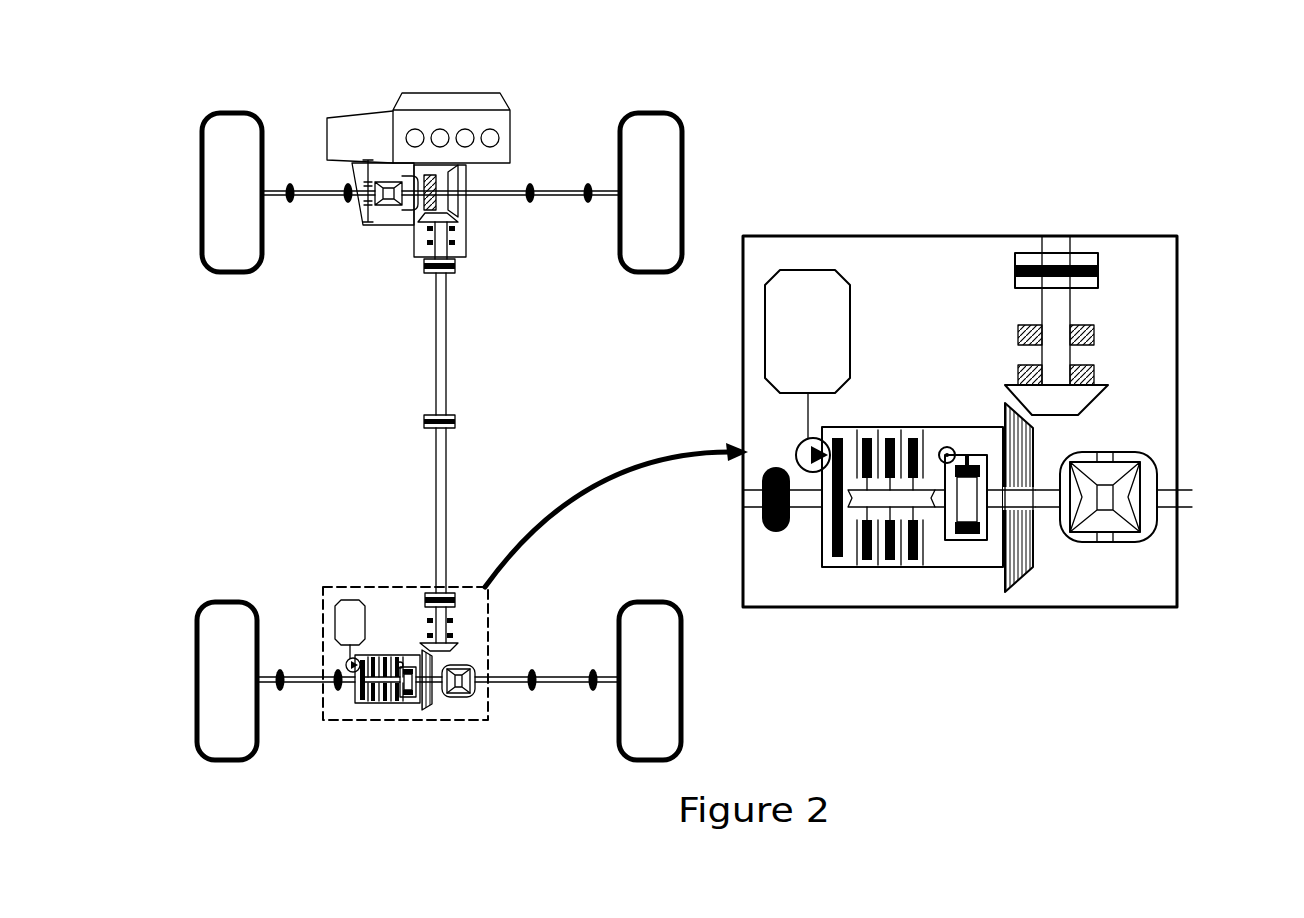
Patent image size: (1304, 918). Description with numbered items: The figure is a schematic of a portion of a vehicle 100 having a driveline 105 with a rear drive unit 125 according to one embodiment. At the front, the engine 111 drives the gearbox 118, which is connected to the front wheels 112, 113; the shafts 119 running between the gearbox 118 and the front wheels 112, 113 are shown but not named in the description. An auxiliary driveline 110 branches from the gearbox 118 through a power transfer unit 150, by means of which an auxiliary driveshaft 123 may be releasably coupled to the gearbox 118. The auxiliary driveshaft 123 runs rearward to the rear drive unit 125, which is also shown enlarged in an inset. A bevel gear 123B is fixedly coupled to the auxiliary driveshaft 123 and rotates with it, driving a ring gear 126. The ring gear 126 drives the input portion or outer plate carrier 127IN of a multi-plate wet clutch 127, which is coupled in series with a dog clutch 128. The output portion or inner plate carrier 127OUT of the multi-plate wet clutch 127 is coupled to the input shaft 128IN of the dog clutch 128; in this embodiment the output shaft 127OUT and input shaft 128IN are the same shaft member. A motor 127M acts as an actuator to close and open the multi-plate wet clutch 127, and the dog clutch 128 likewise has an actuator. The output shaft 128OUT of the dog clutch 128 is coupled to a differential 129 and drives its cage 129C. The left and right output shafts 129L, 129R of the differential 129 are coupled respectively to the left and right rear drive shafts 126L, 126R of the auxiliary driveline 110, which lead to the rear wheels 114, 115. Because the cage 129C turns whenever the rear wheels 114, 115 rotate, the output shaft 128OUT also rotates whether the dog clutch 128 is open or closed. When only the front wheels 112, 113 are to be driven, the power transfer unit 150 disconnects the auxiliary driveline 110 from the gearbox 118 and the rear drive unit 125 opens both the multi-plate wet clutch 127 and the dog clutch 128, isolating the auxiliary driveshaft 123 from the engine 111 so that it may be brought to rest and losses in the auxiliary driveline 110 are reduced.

The vehicle 100 is at (708, 117).
The driveline 105 is at (577, 327).
The auxiliary driveline 110 is at (325, 370).
The engine 111 is at (477, 120).
The front wheel 112 is at (228, 247).
The front wheel 113 is at (645, 140).
The rear wheel 114 is at (225, 630).
The rear wheel 115 is at (648, 620).
The gearbox 118 is at (362, 132).
The front axle half-shafts 119 is at (315, 188).
The auxiliary driveshaft 123 is at (440, 320).
The bevel gear 123B is at (441, 665).
The rear drive unit 125 is at (360, 587).
The ring gear 126 is at (420, 655).
The left rear drive shaft 126L is at (300, 670).
The right rear drive shaft 126R is at (563, 682).
The multi-plate wet clutch 127 is at (372, 705).
The input portion or outer plate carrier 127IN is at (387, 655).
The output portion or inner plate carrier 127OUT is at (395, 703).
The motor 127M is at (340, 605).
The dog clutch 128 is at (410, 697).
The input shaft 128IN is at (933, 490).
The output shaft 128OUT is at (447, 670).
The differential 129 is at (476, 701).
The cage 129C is at (458, 696).
The left output shaft 129L is at (1045, 500).
The right output shaft 129R is at (505, 675).
The power transfer unit 150 is at (467, 235).